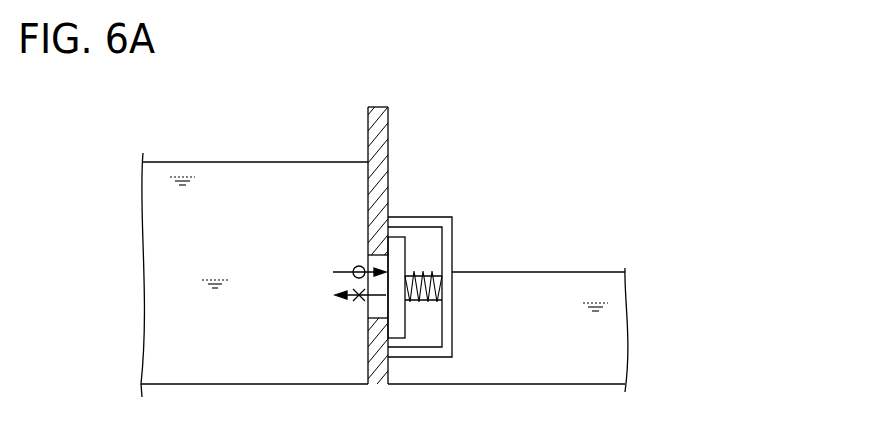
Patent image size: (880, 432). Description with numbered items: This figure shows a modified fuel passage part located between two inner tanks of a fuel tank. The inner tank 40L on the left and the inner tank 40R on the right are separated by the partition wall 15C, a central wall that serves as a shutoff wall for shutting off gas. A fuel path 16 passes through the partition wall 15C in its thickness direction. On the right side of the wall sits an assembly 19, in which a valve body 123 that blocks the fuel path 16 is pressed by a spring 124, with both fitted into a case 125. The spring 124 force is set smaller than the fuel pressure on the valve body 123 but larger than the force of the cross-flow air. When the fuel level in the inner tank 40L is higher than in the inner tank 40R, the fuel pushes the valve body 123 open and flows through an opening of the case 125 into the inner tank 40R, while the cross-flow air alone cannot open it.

The inner tank 40L is at (237, 139).
The inner tank 40R is at (558, 139).
The partition wall 15C is at (388, 140).
The fuel path 16 is at (370, 312).
The assembly 19 is at (456, 335).
The case 125 is at (440, 217).
The valve body 123 is at (396, 237).
The spring 124 is at (436, 274).